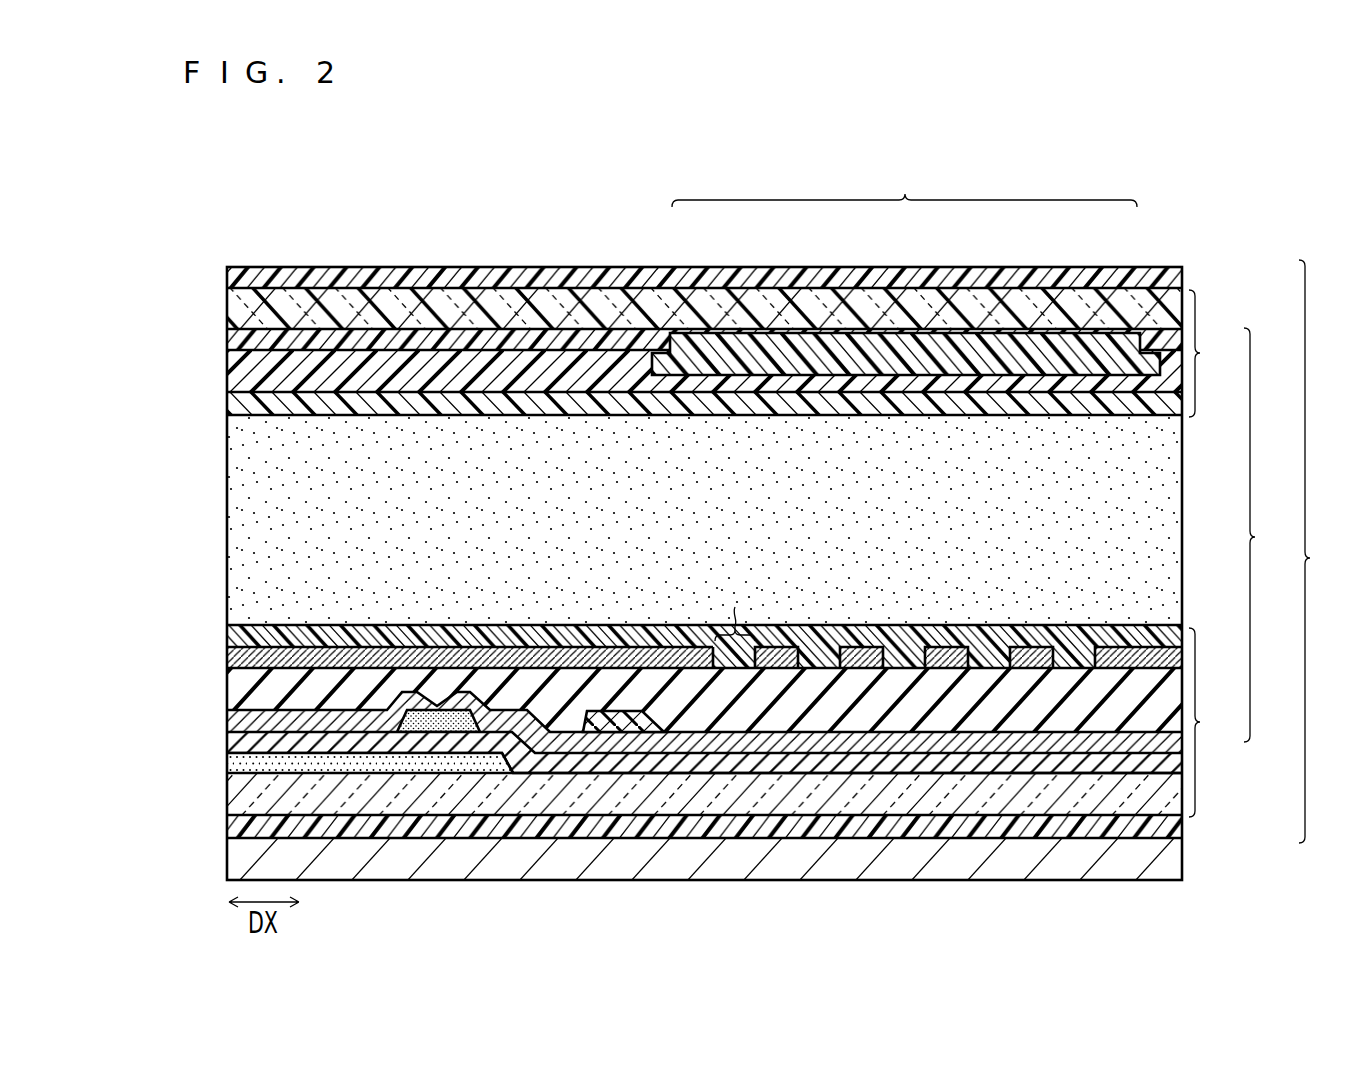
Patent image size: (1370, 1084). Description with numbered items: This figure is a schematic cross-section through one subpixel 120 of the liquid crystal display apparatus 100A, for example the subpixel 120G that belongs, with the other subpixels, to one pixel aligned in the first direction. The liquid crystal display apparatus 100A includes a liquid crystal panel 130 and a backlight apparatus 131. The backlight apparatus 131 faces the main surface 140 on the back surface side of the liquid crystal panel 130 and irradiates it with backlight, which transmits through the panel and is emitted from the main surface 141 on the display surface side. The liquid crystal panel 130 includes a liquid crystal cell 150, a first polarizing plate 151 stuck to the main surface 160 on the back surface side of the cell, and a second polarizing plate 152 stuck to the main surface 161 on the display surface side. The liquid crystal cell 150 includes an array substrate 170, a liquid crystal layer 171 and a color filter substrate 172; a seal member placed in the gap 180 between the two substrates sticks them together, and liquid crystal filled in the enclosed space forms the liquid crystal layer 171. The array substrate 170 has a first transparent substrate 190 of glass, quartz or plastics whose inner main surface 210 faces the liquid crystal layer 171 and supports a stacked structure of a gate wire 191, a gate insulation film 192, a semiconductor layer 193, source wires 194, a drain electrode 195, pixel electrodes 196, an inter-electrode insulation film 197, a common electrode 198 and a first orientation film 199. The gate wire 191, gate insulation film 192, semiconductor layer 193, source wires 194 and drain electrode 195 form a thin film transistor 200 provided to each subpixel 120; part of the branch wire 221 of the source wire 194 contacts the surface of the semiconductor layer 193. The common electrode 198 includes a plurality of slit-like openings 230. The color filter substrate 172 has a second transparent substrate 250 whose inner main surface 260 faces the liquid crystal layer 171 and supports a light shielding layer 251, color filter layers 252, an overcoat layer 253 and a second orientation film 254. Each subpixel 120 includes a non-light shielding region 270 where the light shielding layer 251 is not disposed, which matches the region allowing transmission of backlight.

The liquid crystal display apparatus 100A is at (1235, 126).
The subpixel 120 is at (251, 204).
The subpixel 120G is at (250, 216).
The liquid crystal panel 130 is at (1326, 551).
The backlight apparatus 131 is at (1182, 868).
The main surface on back surface side of the liquid crystal panel 140 is at (650, 840).
The main surface on display surface side of the liquid crystal panel 141 is at (453, 268).
The liquid crystal cell 150 is at (1271, 535).
The first polarizing plate 151 is at (1182, 830).
The second polarizing plate 152 is at (1182, 272).
The main surface on back surface side of the liquid crystal cell 160 is at (727, 817).
The main surface on display surface side of the liquid crystal cell 161 is at (547, 280).
The array substrate 170 is at (1215, 722).
The liquid crystal layer 171 is at (1182, 537).
The color filter substrate 172 is at (1214, 353).
The gap 180 is at (242, 491).
The first transparent substrate 190 is at (227, 790).
The gate wire 191 is at (227, 760).
The gate insulation film 192 is at (227, 742).
The semiconductor layer 193 is at (439, 727).
The source wire 194 is at (227, 718).
The drain electrode 195 is at (583, 745).
The pixel electrode 196 is at (838, 748).
The inter-electrode insulation film 197 is at (227, 689).
The common electrode 198 is at (227, 655).
The first orientation film 199 is at (227, 636).
The thin film transistor 200 is at (438, 696).
The inner main surface 210 is at (402, 746).
The branch wire 221 is at (329, 722).
The slit-like opening 230 is at (736, 609).
The second transparent substrate 250 is at (227, 303).
The light shielding layer 251 is at (227, 338).
The color filter layer 252 is at (683, 340).
The overcoat layer 253 is at (227, 370).
The second orientation film 254 is at (227, 403).
The inner main surface 260 is at (407, 328).
The non-light shielding region 270 is at (904, 179).